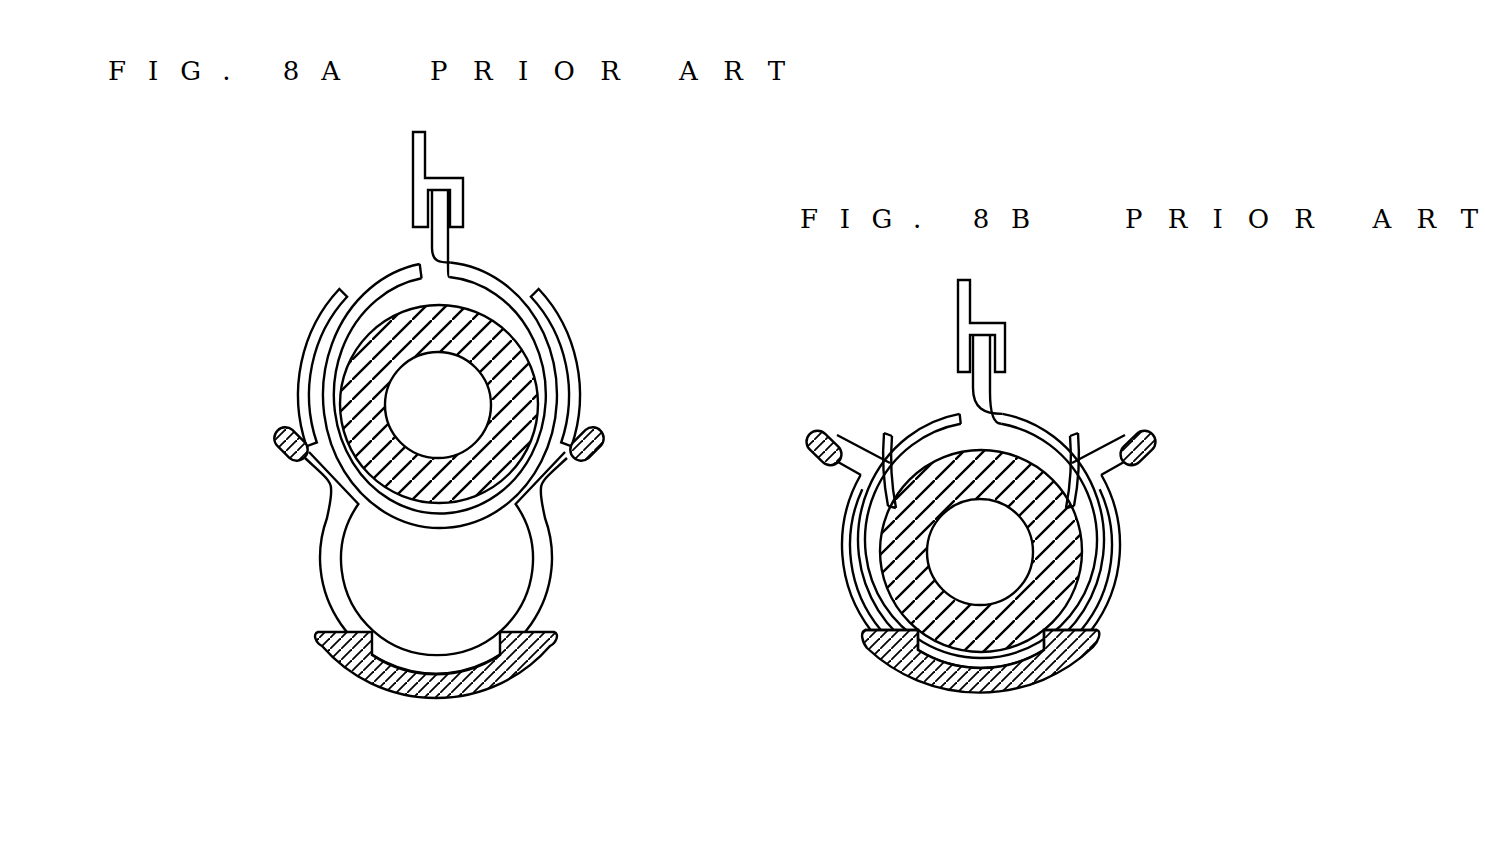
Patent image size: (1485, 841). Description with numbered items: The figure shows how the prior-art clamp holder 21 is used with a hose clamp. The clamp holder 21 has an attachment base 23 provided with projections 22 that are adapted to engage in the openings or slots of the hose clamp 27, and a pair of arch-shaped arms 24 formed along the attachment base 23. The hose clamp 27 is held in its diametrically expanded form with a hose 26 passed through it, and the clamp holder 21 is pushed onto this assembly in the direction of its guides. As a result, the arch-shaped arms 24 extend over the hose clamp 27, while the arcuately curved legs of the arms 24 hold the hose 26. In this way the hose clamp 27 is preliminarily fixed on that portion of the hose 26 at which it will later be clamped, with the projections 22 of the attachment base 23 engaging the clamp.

In FIG. 8A, the clamp holder 21 is at (571, 602).
In FIG. 8B, the projections 22 is at (907, 640).
In FIG. 8A, the attachment base 23 is at (513, 673).
In FIG. 8B, the attachment base 23 is at (1010, 692).
In FIG. 8A, the arch-shaped arms 24 is at (550, 538).
In FIG. 8B, the arch-shaped arms 24 is at (875, 510).
In FIG. 8A, the hose 26 is at (503, 283).
In FIG. 8B, the hose 26 is at (1020, 452).
In FIG. 8A, the hose clamp 27 is at (488, 317).
In FIG. 8B, the hose clamp 27 is at (1012, 408).